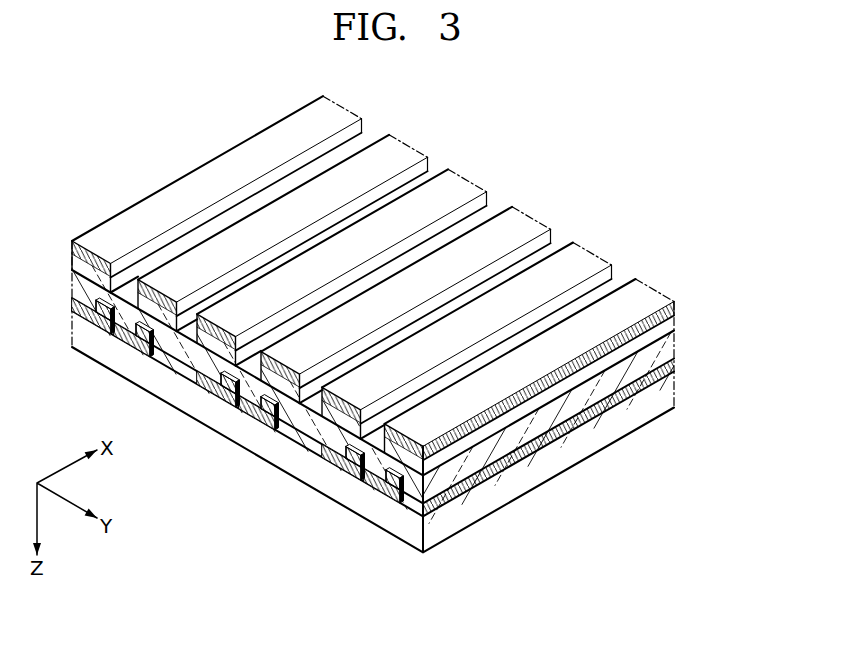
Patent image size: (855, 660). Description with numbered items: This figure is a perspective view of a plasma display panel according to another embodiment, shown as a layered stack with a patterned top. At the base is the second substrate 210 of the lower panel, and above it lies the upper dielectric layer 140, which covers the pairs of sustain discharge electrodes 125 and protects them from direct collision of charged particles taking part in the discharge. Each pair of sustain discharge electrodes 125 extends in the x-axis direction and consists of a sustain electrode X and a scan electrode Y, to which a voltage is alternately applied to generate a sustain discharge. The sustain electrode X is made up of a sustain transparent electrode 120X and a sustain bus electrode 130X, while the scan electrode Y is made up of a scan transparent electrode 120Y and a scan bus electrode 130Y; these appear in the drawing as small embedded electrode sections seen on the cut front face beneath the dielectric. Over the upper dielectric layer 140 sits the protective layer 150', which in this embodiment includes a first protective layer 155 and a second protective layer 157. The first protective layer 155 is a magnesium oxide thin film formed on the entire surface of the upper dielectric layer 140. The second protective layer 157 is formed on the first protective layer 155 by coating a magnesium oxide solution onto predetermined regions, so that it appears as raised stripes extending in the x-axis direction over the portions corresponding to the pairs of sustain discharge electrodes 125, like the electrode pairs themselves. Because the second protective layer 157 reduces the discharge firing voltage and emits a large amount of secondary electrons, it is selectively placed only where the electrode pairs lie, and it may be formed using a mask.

The second substrate 210 is at (567, 445).
The upper dielectric layer 140 is at (672, 344).
The sustain bus electrode 130X is at (328, 446).
The scan bus electrode 130Y is at (241, 410).
The sustain transparent electrode 120X is at (347, 461).
The scan transparent electrode 120Y is at (264, 423).
The pairs of sustain discharge electrodes 125 is at (295, 598).
The first protective layer 155 is at (672, 322).
The second protective layer 157 is at (675, 300).
The protective layer 150' is at (435, 285).